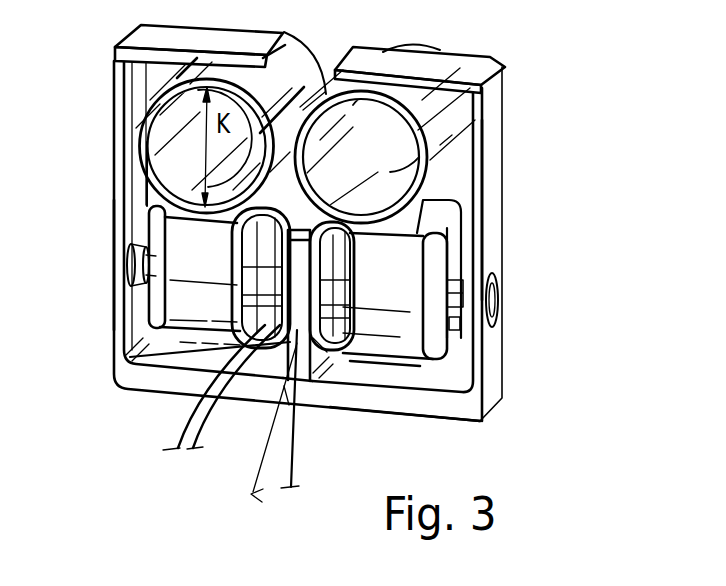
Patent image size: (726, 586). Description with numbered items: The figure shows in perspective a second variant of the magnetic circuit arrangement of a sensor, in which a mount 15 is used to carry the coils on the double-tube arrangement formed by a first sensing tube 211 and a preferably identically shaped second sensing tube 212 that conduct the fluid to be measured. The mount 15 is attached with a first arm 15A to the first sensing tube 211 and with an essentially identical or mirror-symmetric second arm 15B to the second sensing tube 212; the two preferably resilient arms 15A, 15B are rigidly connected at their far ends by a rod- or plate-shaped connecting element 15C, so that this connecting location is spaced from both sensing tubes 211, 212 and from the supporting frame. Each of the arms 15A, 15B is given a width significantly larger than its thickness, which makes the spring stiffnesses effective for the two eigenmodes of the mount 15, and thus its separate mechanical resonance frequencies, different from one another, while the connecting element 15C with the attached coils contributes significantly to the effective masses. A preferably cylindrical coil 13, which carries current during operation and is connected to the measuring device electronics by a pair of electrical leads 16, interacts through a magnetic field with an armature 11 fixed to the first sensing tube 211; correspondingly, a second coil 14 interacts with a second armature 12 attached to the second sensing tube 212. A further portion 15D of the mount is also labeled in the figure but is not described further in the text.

The armature 11 is at (175, 321).
The second armature 12 is at (405, 350).
The coil 13 is at (297, 343).
The second coil 14 is at (340, 393).
The mount 15 is at (560, 105).
The first arm 15A is at (118, 262).
The second arm 15B is at (500, 205).
The connecting element 15C is at (428, 413).
The base projection of holder 15D is at (286, 404).
The electrical leads 16 is at (177, 432).
The first sensing tube 211 is at (248, 29).
The second sensing tube 212 is at (422, 43).